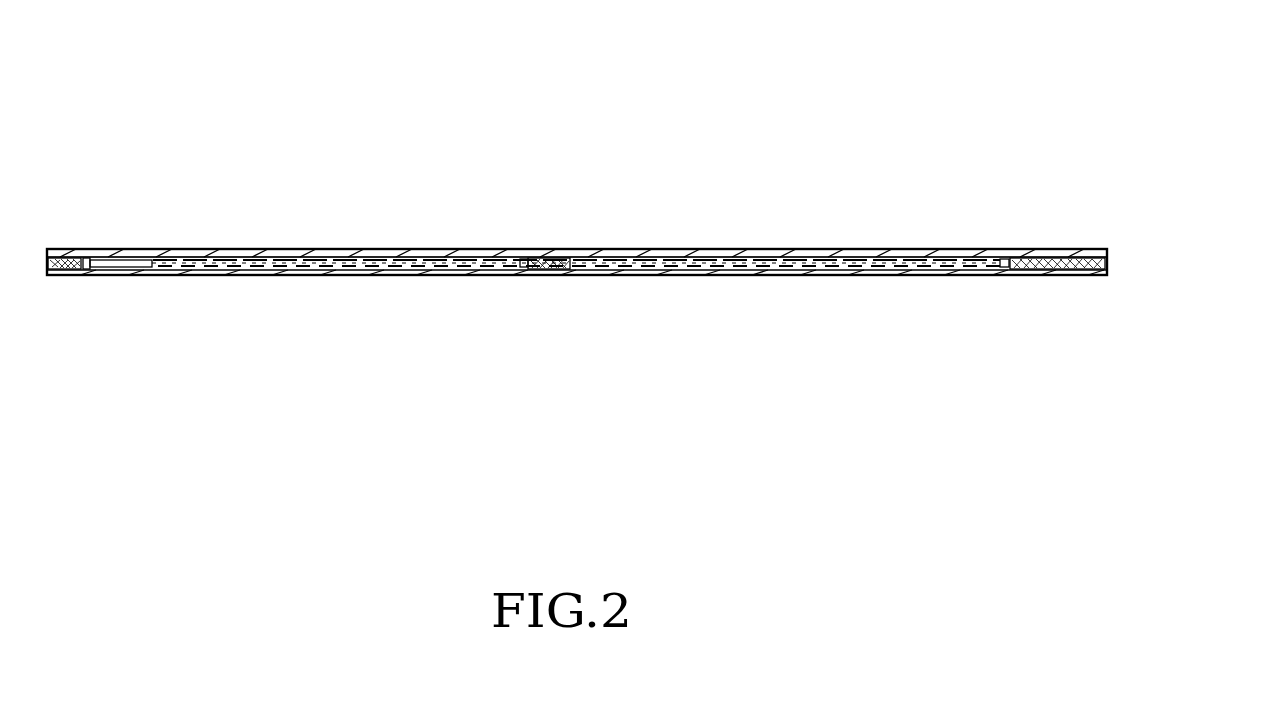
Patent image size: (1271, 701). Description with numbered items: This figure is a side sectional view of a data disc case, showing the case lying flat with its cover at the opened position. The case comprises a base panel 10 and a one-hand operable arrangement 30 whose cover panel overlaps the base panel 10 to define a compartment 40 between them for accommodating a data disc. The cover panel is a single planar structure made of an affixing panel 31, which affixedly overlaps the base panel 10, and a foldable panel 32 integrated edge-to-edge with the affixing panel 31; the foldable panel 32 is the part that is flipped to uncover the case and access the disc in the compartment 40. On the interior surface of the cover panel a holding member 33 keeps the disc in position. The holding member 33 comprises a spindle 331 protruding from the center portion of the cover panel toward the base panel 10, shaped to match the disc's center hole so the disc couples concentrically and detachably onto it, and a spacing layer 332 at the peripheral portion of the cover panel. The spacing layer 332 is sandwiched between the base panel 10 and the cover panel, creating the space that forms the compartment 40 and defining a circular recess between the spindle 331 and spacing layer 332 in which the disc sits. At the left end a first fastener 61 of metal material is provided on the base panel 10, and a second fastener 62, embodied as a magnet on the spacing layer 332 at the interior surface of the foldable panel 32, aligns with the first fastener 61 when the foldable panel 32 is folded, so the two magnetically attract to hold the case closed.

The base panel 10 is at (238, 275).
The one-hand operable arrangement 30 is at (597, 140).
The affixing panel 31 is at (826, 252).
The foldable panel 32 is at (305, 252).
The holding member 33 is at (860, 393).
The spindle 331 is at (553, 267).
The spacing layer 332 is at (1034, 275).
The compartment 40 is at (727, 269).
The first fastener 61 is at (124, 275).
The second fastener 62 is at (130, 255).